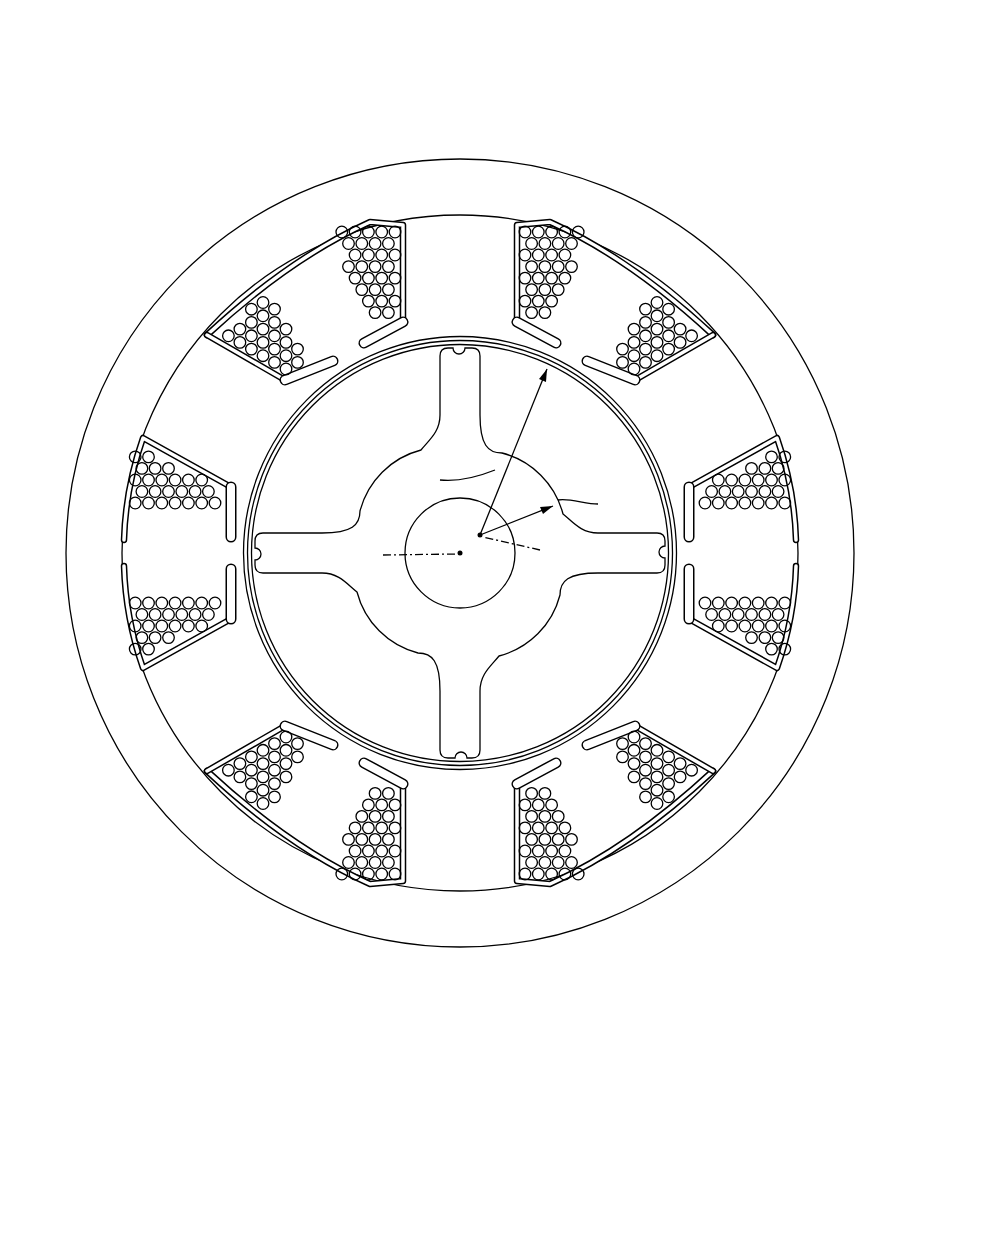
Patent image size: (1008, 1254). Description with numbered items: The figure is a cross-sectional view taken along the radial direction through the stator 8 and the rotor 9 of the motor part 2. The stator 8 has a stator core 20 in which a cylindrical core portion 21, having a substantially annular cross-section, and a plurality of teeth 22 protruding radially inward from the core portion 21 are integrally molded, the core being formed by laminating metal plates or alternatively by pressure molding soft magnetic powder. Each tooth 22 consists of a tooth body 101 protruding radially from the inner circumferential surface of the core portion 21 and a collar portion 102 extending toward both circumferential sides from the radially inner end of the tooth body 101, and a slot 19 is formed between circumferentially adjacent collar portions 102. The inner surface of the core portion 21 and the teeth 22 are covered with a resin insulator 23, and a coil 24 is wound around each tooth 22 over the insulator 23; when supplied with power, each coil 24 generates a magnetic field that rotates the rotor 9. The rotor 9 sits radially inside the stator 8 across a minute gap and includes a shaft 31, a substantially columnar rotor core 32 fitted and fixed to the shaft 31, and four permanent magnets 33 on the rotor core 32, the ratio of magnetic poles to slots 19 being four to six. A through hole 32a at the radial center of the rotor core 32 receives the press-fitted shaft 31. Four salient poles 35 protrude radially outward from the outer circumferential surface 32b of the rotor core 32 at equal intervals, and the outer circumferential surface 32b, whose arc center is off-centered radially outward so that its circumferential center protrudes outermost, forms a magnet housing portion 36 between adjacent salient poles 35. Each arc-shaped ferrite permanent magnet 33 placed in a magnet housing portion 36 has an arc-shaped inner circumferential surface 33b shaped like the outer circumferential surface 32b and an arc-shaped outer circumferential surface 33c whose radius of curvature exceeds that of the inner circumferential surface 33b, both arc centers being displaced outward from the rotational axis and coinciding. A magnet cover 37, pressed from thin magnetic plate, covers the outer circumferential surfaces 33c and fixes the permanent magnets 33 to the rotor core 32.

The motor part 2 is at (695, 112).
The stator 8 is at (186, 257).
The rotor 9 is at (651, 452).
The slot 19 is at (585, 345).
The stator core 20 is at (562, 166).
The core portion 21 is at (598, 195).
The tooth 22 is at (360, 228).
The insulator 23 is at (518, 232).
The coil 24 is at (336, 265).
The shaft 31 is at (643, 583).
The rotor core 32 is at (503, 650).
The through hole 32a is at (415, 572).
The outer circumferential surface 32b is at (310, 405).
The permanent magnet 33 is at (300, 462).
The inner circumferential surface 33b is at (372, 486).
The outer circumferential surface 33c is at (620, 395).
The salient pole 35 is at (438, 380).
The magnet housing portion 36 is at (287, 527).
The magnet cover 37 is at (590, 678).
The tooth body 101 is at (392, 832).
The collar portion 102 is at (346, 855).